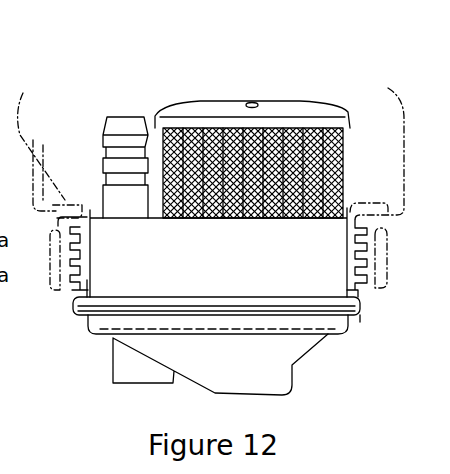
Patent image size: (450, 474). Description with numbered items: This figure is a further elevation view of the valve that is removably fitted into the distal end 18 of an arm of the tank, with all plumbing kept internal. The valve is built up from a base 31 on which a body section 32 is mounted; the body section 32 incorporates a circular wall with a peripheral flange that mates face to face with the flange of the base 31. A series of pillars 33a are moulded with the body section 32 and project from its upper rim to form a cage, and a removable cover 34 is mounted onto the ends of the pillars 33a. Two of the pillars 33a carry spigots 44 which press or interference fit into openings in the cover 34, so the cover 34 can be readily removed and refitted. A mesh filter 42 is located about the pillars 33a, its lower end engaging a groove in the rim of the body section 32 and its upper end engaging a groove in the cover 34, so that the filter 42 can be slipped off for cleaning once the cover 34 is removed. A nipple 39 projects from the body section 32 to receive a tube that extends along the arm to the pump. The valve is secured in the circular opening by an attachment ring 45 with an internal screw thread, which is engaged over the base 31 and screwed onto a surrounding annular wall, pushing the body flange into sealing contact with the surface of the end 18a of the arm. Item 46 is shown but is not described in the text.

The distal end 18 is at (377, 174).
The end 18a is at (50, 180).
The base 31 is at (167, 353).
The body section 32 is at (105, 258).
The pillars 33a is at (220, 133).
The cover 34 is at (292, 105).
The nipple 39 is at (135, 122).
The mesh filter 42 is at (292, 145).
The spigots 44 is at (252, 100).
The attachment ring 45 is at (368, 322).
The sealing flange 46 is at (88, 334).